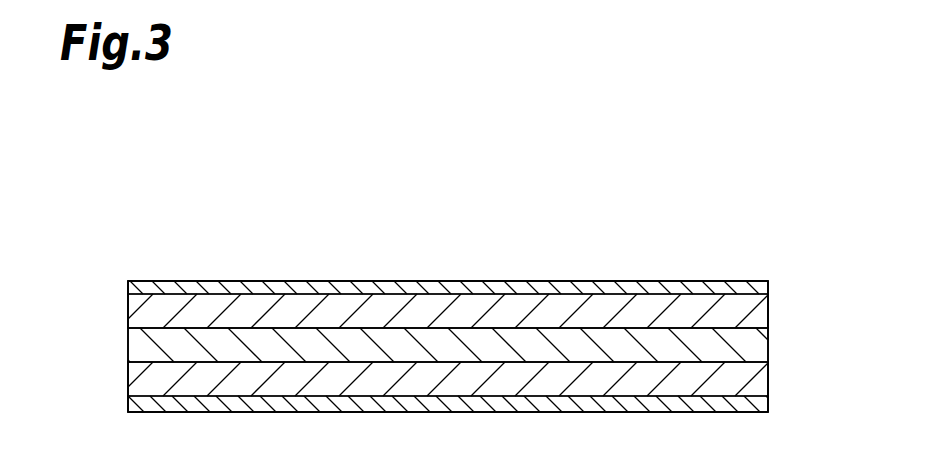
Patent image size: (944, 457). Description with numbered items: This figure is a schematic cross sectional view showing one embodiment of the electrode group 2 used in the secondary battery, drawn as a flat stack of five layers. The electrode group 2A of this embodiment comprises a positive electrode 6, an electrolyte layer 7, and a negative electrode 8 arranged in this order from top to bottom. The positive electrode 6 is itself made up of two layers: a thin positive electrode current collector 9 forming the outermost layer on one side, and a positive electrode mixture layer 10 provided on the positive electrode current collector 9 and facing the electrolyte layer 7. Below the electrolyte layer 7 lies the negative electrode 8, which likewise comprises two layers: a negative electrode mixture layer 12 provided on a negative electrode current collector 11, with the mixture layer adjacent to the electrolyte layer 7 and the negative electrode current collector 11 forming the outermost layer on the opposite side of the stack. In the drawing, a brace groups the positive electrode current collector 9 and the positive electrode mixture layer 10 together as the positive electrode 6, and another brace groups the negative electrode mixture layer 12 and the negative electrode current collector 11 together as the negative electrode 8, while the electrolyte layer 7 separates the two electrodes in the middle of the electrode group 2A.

The electrode group 2 is at (448, 346).
The electrode group 2A is at (719, 252).
The positive electrode 6 is at (834, 270).
The electrolyte layer 7 is at (770, 346).
The negative electrode 8 is at (834, 367).
The positive electrode current collector 9 is at (770, 287).
The positive electrode mixture layer 10 is at (770, 313).
The negative electrode current collector 11 is at (770, 403).
The negative electrode mixture layer 12 is at (770, 380).